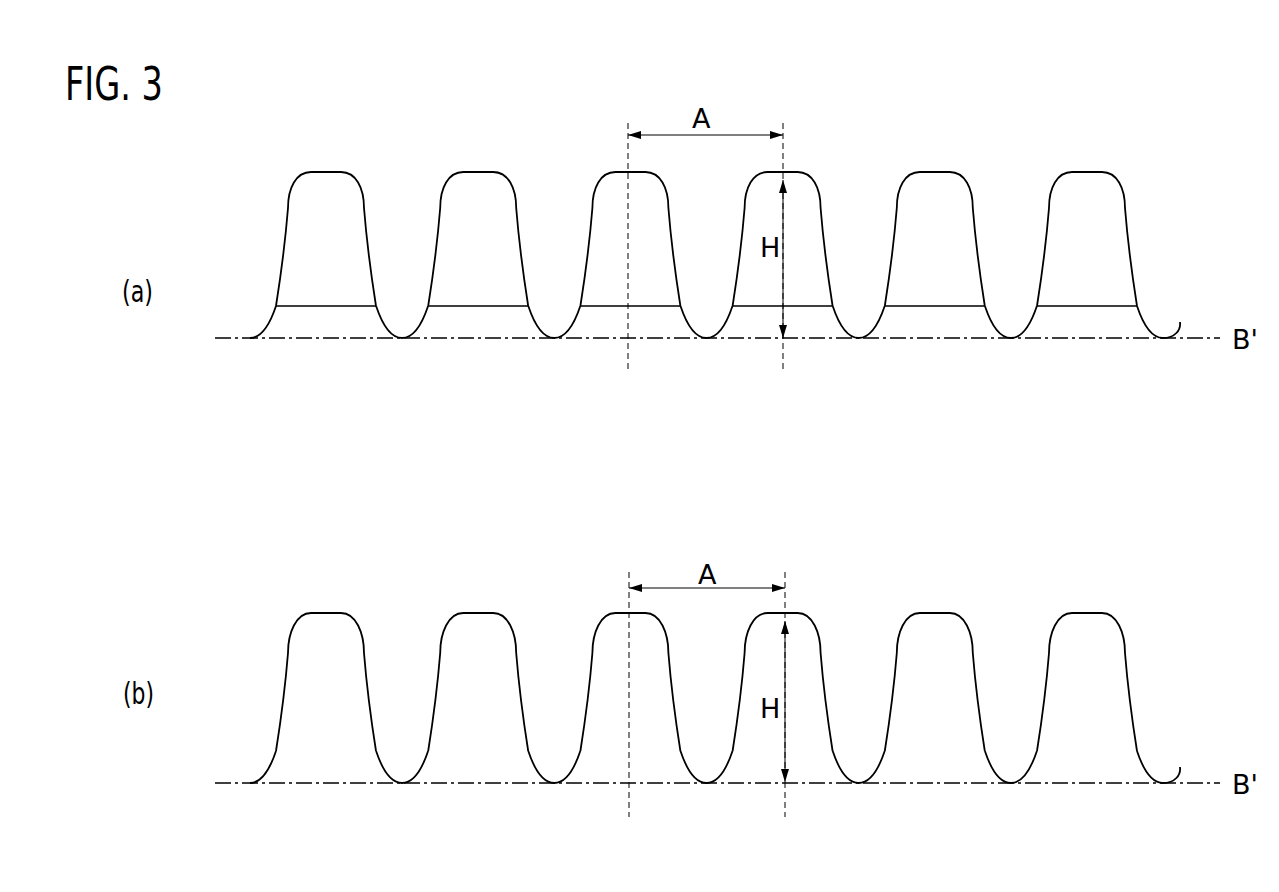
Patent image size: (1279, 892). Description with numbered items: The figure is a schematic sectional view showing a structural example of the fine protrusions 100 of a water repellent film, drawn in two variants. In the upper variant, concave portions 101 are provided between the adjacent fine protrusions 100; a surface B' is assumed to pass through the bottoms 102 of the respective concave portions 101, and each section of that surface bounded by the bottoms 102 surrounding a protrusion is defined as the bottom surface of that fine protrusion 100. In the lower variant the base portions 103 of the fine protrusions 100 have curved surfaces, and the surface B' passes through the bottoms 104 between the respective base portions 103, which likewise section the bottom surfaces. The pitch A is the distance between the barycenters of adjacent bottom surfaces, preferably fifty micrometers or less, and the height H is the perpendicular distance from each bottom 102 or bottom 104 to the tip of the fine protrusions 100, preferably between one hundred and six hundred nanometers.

The fine protrusions 100 is at (1092, 198).
The concave portions 101 is at (403, 320).
The bottoms of the concave portions 102 is at (553, 342).
The base portions 103 is at (420, 777).
The bottoms between the base portions 104 is at (553, 785).